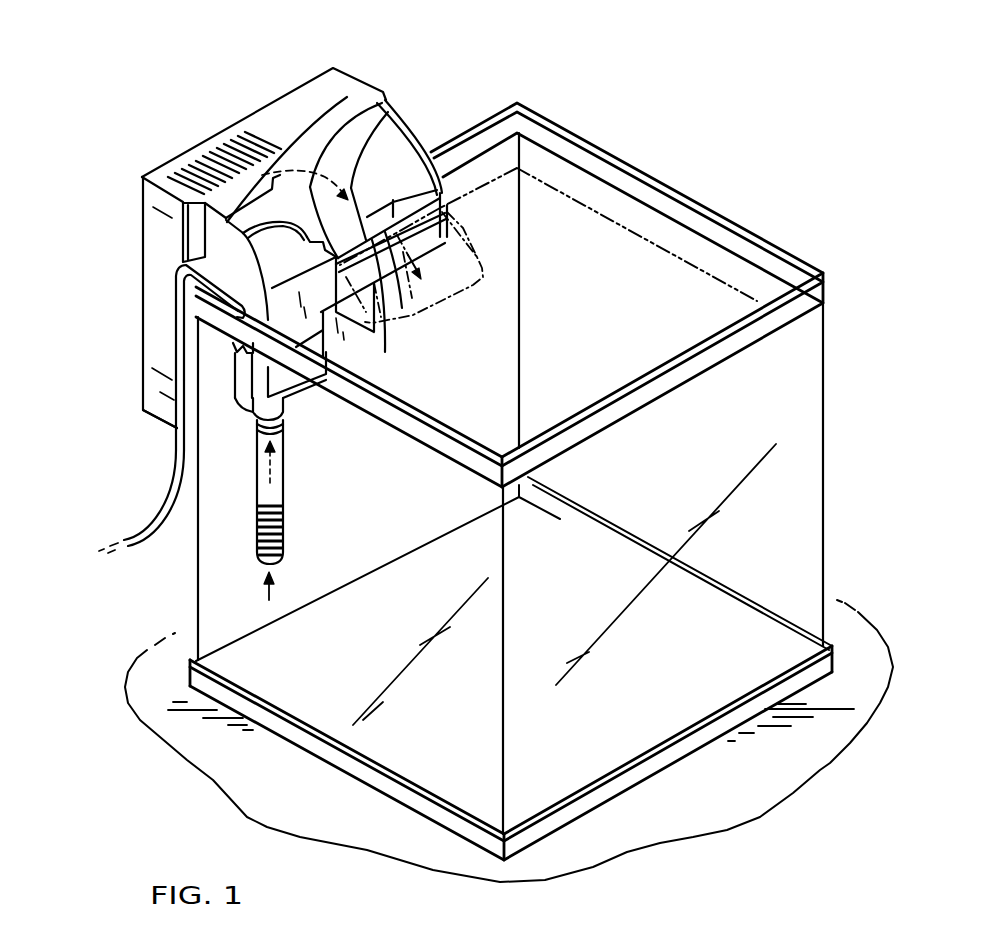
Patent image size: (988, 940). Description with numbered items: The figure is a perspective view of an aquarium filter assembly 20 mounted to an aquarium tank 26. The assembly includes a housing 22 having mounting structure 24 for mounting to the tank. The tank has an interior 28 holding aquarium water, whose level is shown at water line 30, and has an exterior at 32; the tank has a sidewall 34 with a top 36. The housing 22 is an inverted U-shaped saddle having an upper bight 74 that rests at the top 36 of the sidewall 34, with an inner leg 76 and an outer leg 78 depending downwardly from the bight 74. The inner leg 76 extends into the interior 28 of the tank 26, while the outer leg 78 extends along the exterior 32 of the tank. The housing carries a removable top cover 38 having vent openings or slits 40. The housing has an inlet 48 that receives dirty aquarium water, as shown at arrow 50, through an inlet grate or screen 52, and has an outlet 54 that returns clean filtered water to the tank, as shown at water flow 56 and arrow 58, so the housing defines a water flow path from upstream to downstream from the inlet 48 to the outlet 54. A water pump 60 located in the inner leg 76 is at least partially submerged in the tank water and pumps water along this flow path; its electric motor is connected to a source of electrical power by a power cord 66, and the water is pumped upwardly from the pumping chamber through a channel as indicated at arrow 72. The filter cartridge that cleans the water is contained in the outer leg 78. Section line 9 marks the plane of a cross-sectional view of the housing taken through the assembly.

The section line 9- 9 is at (180, 148).
The aquarium filter assembly 20 is at (390, 84).
The housing 22 is at (157, 245).
The mounting structure 24 is at (176, 310).
The aquarium tank 26 is at (828, 363).
The interior 28 is at (618, 267).
The water line 30 is at (665, 253).
The exterior 32 is at (787, 243).
The sidewall 34 is at (482, 167).
The top 36 is at (447, 137).
The removable top cover 38 is at (300, 92).
The vent openings or slits 40 is at (225, 148).
The inlet 48 is at (284, 482).
The arrow 50 is at (276, 586).
The inlet grate or screen 52 is at (285, 532).
The outlet 54 is at (370, 343).
The water flow 56 is at (473, 265).
The arrow 58 is at (416, 306).
The water pump 60 is at (260, 375).
The power cord 66 is at (160, 507).
The arrow 72 is at (204, 243).
The upper bight 74 is at (178, 390).
The inner leg 76 is at (302, 407).
The outer leg 78 is at (152, 419).